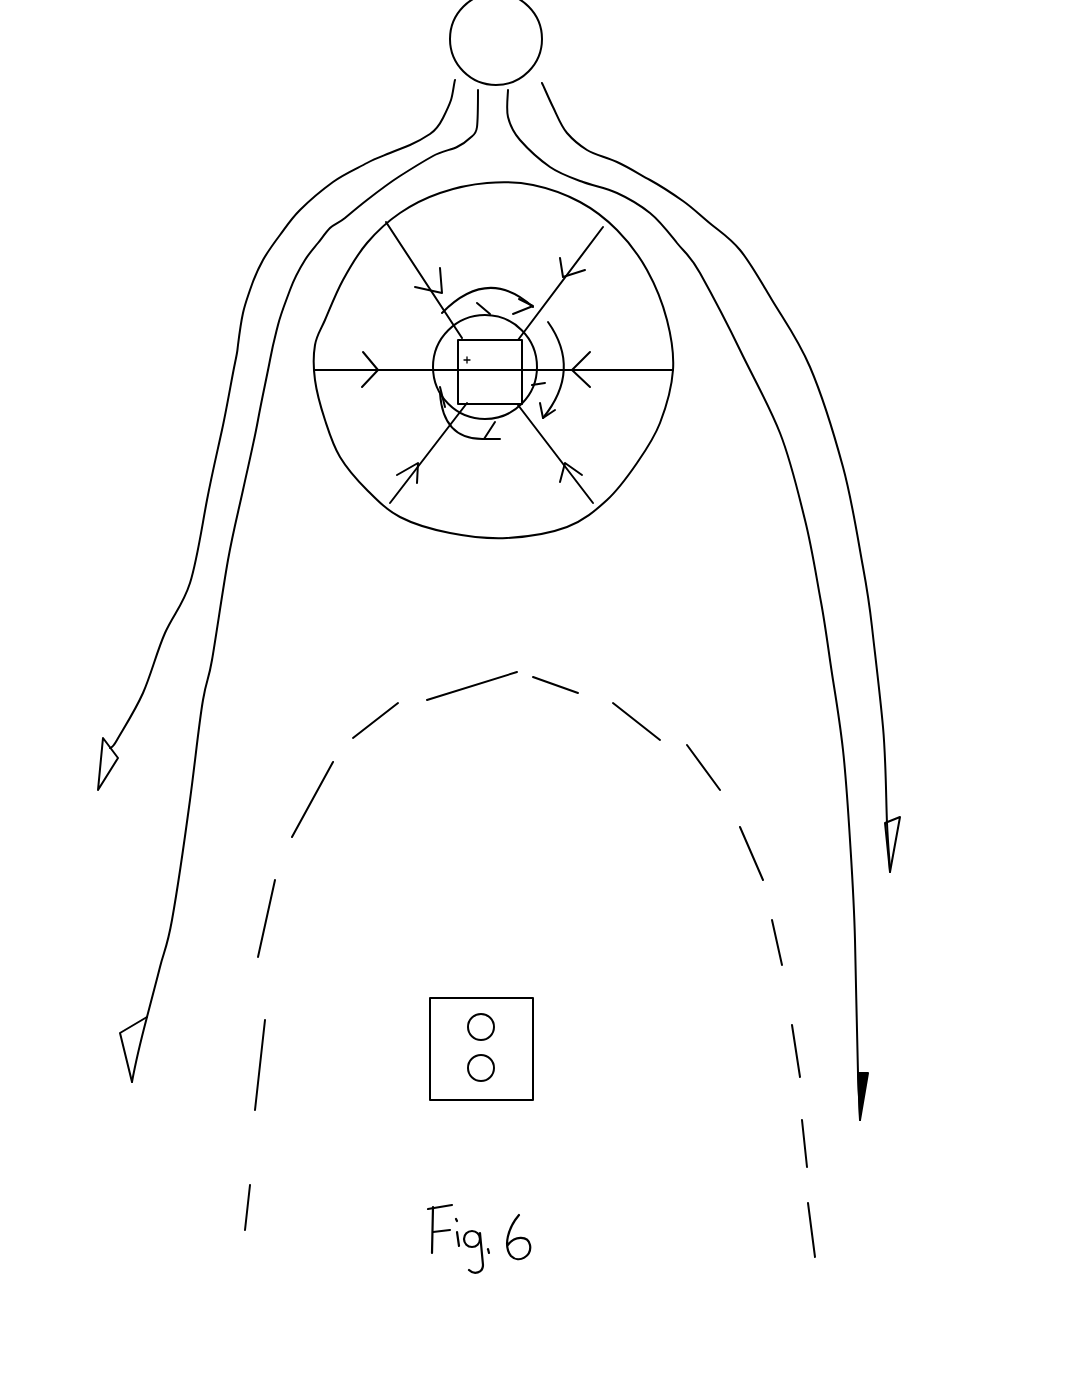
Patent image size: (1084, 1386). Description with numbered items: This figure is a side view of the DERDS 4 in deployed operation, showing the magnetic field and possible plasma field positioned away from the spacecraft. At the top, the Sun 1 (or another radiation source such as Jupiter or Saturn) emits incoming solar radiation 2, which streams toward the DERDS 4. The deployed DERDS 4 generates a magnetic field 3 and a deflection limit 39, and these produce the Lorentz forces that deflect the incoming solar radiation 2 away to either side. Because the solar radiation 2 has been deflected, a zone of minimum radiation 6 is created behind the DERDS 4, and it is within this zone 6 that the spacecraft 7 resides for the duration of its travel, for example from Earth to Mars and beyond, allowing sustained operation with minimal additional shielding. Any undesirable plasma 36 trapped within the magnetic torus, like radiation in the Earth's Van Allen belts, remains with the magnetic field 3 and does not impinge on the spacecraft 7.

The Sun 1 is at (523, 42).
The solar radiation 2 is at (499, 600).
The magnetic field 3 is at (650, 372).
The DERDS 4 is at (462, 355).
The zone of minimum radiation 6 is at (530, 964).
The spacecraft 7 is at (535, 1049).
The plasma 36 is at (443, 402).
The deflection limit 39 is at (557, 530).